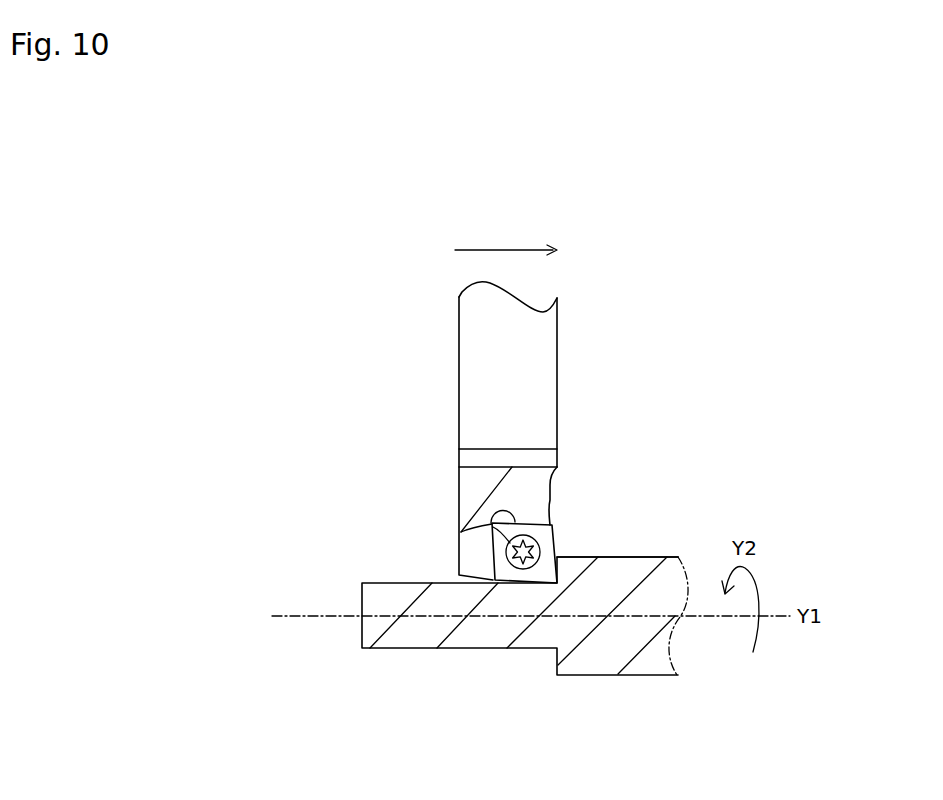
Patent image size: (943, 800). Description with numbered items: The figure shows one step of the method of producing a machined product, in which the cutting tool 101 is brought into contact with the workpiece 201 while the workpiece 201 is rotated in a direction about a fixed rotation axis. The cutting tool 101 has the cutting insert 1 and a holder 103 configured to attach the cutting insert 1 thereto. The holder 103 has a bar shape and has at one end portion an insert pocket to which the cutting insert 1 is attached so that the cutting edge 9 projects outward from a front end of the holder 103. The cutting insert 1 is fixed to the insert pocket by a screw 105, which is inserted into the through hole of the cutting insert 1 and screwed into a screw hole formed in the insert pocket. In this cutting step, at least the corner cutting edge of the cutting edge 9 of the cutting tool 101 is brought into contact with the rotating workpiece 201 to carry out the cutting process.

The cutting tool 101 is at (427, 340).
The holder 103 is at (537, 378).
The screw 105 is at (461, 532).
The cutting insert 1 is at (557, 560).
The cutting edge 9 is at (598, 557).
The workpiece 201 is at (597, 660).